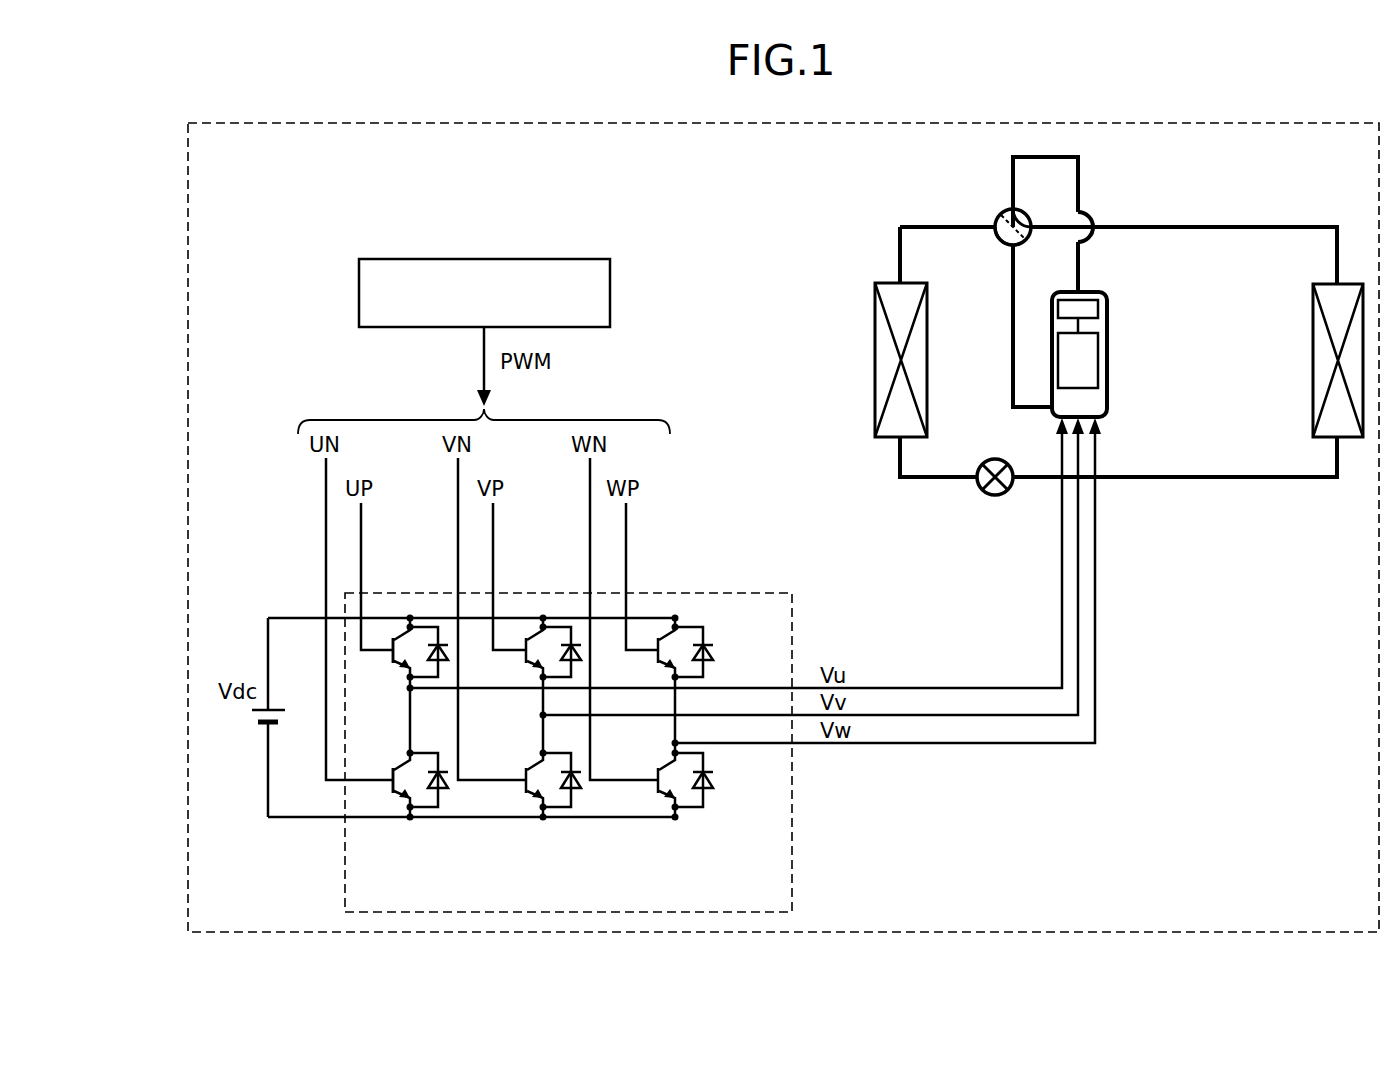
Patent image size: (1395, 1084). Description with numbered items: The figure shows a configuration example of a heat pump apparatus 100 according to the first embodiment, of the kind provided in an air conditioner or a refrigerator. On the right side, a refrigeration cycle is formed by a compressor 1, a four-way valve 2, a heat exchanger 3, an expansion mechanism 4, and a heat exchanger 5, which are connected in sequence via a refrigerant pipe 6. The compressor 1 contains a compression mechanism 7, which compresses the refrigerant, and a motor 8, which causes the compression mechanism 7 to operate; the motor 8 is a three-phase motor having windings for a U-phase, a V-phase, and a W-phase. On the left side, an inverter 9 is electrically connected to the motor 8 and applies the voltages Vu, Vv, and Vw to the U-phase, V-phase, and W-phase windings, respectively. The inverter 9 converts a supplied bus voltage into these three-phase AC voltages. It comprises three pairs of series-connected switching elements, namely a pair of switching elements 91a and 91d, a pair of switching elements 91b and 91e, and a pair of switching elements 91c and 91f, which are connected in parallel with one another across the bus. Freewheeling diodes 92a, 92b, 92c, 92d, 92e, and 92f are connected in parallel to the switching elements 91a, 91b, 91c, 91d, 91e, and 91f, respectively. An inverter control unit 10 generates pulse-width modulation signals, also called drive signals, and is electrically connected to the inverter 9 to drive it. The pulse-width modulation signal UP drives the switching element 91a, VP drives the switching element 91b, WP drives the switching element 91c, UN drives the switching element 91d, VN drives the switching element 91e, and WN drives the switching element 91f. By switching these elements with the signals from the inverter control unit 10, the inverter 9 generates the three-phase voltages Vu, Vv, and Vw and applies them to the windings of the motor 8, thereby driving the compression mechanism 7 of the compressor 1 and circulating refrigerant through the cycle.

The heat pump apparatus 100 is at (1317, 123).
The compressor 1 is at (1062, 299).
The four-way valve 2 is at (997, 216).
The heat exchanger 3 is at (890, 283).
The expansion mechanism 4 is at (993, 497).
The heat exchanger 5 is at (1313, 306).
The refrigerant pipe 6 is at (1225, 227).
The compression mechanism 7 is at (1058, 305).
The motor 8 is at (1098, 375).
The inverter 9 is at (792, 612).
The inverter control unit 10 is at (610, 288).
The switching element 91a is at (388, 666).
The switching element 91b is at (521, 666).
The switching element 91c is at (653, 666).
The switching element 91d is at (392, 796).
The switching element 91e is at (525, 796).
The switching element 91f is at (657, 796).
The freewheeling diode 92a is at (433, 620).
The freewheeling diode 92b is at (566, 620).
The freewheeling diode 92c is at (698, 620).
The freewheeling diode 92d is at (432, 810).
The freewheeling diode 92e is at (565, 810).
The freewheeling diode 92f is at (697, 810).